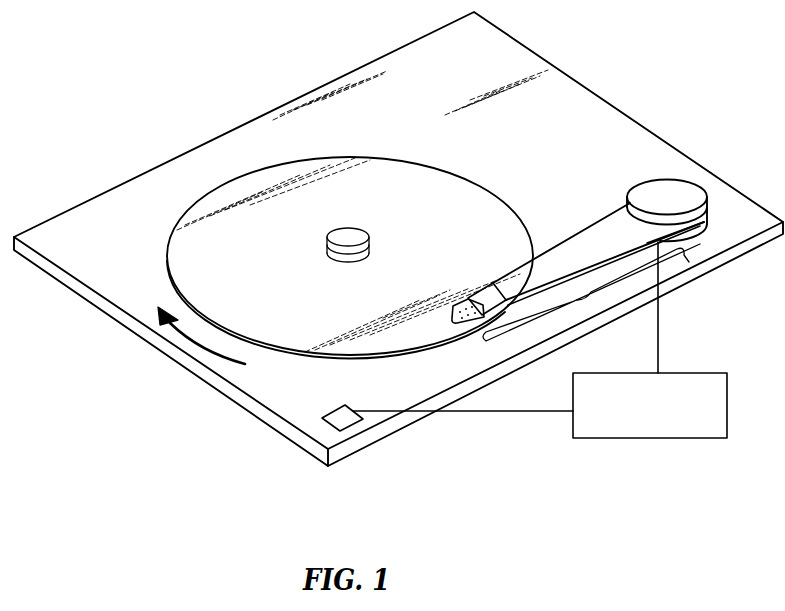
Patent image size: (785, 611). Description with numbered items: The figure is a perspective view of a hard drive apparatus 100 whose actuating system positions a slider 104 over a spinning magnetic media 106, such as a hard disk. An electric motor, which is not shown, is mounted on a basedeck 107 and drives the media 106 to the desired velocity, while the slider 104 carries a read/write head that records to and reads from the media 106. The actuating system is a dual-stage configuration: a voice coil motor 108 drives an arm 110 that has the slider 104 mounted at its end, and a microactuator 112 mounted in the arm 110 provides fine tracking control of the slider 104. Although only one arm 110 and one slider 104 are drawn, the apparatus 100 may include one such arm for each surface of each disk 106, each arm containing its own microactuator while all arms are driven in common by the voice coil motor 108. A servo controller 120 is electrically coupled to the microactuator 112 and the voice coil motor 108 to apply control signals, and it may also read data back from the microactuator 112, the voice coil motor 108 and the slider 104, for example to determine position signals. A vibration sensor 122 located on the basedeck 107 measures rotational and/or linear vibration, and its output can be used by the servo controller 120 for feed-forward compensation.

The hard drive apparatus 100 is at (124, 135).
The slider 104 is at (465, 300).
The magnetic media 106 is at (399, 163).
The basedeck 107 is at (270, 413).
The voice coil motor 108 is at (672, 190).
The arm 110 is at (588, 298).
The microactuator 112 is at (490, 290).
The servo controller 120 is at (608, 436).
The vibration sensor 122 is at (352, 427).